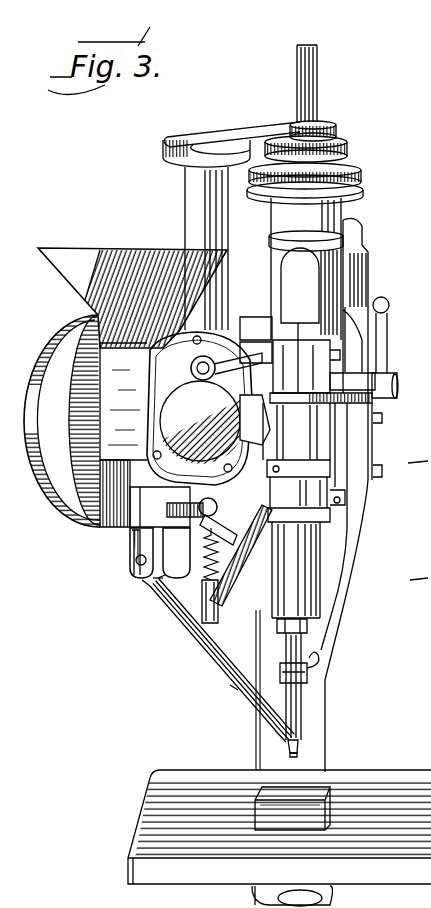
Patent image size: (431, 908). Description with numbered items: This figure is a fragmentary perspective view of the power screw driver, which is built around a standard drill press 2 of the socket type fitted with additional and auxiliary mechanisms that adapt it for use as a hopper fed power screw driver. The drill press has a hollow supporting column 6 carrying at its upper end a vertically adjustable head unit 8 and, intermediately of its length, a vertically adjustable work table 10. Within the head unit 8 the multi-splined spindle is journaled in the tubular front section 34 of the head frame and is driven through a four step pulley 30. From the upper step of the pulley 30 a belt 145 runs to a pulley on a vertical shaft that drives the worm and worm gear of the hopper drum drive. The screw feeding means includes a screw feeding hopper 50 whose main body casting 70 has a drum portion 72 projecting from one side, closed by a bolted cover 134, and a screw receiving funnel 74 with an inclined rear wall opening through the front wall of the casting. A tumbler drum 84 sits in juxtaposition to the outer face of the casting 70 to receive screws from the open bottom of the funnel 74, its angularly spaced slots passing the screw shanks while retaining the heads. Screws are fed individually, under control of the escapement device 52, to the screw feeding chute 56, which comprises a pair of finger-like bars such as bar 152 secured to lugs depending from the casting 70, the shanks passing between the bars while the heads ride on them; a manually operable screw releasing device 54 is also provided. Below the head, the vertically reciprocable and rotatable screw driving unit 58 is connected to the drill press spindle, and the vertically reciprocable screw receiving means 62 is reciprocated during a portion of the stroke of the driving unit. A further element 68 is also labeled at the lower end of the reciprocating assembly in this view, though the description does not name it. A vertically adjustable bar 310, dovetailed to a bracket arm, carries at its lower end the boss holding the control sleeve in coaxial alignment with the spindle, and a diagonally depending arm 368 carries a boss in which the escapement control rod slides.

The drill press 2 is at (286, 25).
The supporting column 6 is at (267, 630).
The head unit 8 is at (365, 246).
The work table 10 is at (412, 407).
The four step pulley 30 is at (356, 180).
The tubular front section 34 is at (274, 275).
The screw feeding hopper 50 is at (88, 248).
The escapement device 52 is at (238, 520).
The screw releasing device 54 is at (178, 522).
The screw feeding chute 56 is at (184, 634).
The screw driving unit 58 is at (337, 494).
The screw receiving means 62 is at (327, 562).
The nozzle tip 68 is at (282, 751).
The main body casting 70 is at (103, 493).
The drum portion 72 is at (100, 416).
The screw receiving funnel 74 is at (134, 248).
The tumbler drum 84 is at (38, 457).
The cover 134 is at (210, 401).
The belt 145 is at (242, 132).
The finger-like bar 152 is at (230, 685).
The bar 310 is at (350, 625).
The diagonally depending arm 368 is at (227, 575).